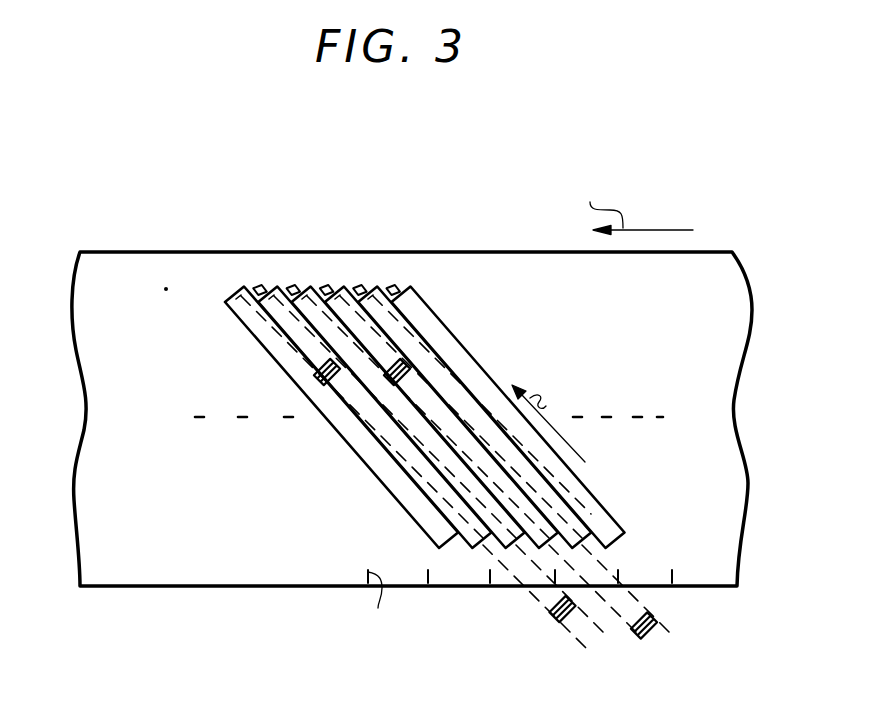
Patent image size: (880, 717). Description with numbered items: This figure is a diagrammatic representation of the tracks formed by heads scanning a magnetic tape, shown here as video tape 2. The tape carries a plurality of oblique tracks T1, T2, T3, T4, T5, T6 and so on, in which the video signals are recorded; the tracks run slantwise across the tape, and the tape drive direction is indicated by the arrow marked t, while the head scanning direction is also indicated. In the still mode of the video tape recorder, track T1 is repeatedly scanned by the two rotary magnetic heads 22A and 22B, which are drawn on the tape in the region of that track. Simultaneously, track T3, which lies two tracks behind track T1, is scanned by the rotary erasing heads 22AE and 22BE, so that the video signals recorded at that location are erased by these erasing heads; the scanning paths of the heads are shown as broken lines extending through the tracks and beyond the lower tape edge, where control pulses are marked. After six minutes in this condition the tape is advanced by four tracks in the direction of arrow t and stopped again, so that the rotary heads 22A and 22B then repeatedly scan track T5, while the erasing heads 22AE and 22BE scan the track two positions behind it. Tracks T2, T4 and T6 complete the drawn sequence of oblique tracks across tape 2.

The video tape 2 is at (160, 588).
The rotary magnetic head 22A is at (314, 378).
The rotary erasing head 22AE is at (392, 384).
The rotary magnetic head 22B is at (551, 614).
The rotary erasing head 22BE is at (645, 640).
The oblique track T1 is at (239, 290).
The oblique track T2 is at (272, 290).
The oblique track T3 is at (306, 290).
The oblique track T4 is at (339, 290).
The oblique track T5 is at (372, 290).
The oblique track T6 is at (404, 290).